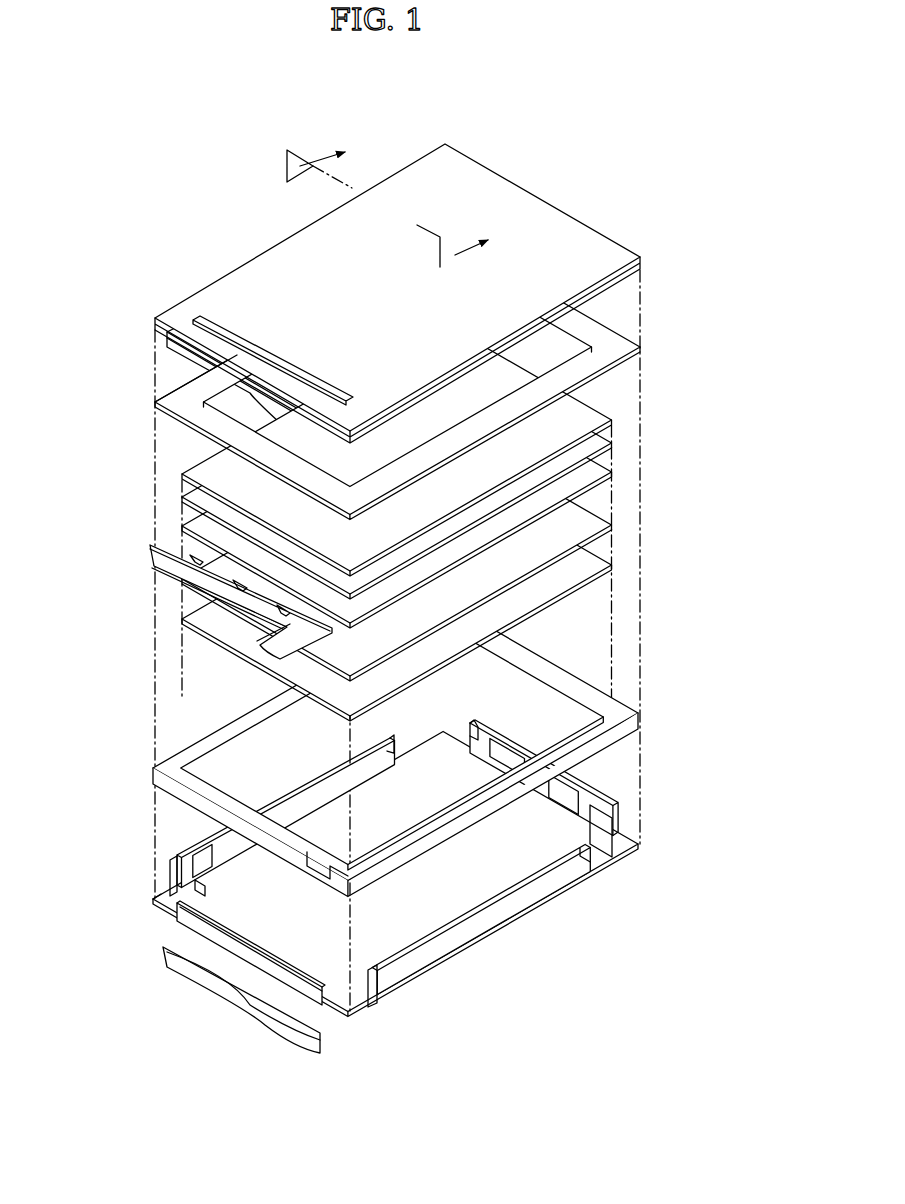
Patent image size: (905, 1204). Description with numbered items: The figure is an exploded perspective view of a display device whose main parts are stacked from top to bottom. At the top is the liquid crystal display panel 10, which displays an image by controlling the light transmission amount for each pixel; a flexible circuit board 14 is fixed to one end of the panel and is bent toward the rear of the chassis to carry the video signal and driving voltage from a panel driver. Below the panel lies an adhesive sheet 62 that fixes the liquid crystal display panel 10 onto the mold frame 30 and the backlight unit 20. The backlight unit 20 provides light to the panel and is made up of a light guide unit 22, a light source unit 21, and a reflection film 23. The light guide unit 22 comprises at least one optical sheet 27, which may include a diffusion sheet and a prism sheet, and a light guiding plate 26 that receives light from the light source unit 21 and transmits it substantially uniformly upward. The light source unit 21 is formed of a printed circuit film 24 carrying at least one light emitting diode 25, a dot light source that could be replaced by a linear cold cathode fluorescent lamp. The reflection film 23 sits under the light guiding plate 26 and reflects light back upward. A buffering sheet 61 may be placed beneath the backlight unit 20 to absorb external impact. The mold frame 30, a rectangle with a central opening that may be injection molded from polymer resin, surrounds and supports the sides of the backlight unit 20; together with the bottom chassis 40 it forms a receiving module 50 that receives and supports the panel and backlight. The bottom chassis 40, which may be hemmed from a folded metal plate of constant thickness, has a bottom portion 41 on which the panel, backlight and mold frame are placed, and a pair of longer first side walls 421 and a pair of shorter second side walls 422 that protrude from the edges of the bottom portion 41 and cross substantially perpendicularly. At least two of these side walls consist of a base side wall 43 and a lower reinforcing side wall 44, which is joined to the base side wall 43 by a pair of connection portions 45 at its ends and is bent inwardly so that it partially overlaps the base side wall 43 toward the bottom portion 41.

The liquid crystal display panel 10 is at (583, 212).
The flexible circuit board 14 is at (200, 985).
The backlight unit 20 is at (56, 668).
The light source unit 21 is at (102, 545).
The light guide unit 22 is at (102, 460).
The reflection film 23 is at (203, 588).
The printed circuit film 24 is at (155, 548).
The light emitting diode 25 is at (175, 567).
The light guiding plate 26 is at (182, 525).
The optical sheet 27 is at (182, 497).
The mold frame 30 is at (645, 713).
The bottom chassis 40 is at (400, 831).
The bottom portion 41 is at (165, 903).
The base side wall 43 is at (293, 798).
The reinforcing side wall 44 is at (200, 840).
The connection portions 45 is at (198, 887).
The receiving module 50 is at (705, 698).
The buffering sheet 61 is at (612, 565).
The adhesive sheet 62 is at (615, 330).
The first side walls 421 is at (205, 835).
The second side walls 422 is at (520, 745).